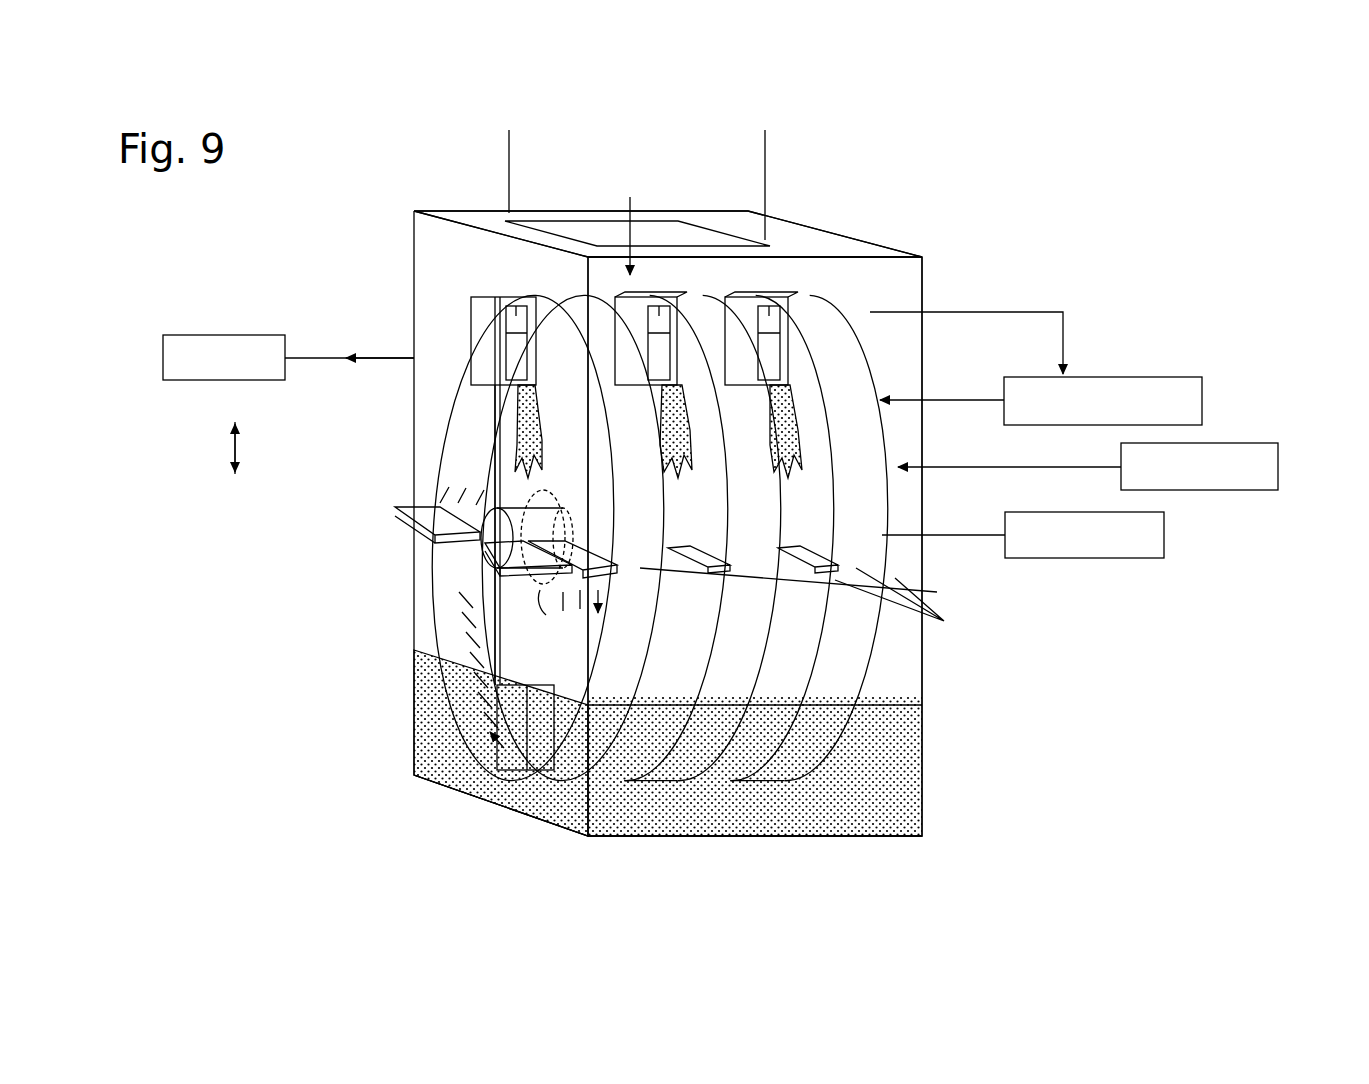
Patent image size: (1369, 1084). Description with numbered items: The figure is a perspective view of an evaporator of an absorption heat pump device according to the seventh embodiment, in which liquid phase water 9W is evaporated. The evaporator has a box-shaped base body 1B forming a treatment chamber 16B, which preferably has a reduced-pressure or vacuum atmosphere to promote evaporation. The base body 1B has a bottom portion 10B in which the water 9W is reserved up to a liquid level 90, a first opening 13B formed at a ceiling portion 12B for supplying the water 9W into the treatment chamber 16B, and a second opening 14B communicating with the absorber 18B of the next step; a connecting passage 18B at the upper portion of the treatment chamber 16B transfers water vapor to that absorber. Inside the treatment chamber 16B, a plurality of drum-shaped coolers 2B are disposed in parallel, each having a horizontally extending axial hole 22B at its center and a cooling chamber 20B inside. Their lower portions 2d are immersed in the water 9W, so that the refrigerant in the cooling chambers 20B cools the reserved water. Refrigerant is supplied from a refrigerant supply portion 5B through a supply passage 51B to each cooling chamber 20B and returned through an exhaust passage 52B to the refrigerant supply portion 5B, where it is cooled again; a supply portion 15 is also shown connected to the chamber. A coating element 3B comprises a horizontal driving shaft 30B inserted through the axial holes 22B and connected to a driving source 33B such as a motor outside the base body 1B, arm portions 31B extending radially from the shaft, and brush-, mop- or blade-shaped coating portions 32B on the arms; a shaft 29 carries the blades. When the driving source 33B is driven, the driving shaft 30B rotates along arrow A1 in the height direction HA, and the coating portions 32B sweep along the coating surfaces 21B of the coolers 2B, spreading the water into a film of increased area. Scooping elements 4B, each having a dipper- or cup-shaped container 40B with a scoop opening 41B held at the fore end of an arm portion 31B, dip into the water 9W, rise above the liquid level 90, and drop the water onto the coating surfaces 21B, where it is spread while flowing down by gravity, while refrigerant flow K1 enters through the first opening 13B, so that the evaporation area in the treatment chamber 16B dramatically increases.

The base body 1B is at (927, 661).
The ceiling portion 12B is at (775, 235).
The first opening 13B is at (697, 237).
The treatment chamber 16B is at (892, 285).
The bottom portion 10B is at (525, 818).
The lower portions 2d is at (673, 786).
The liquid phase water 9W is at (515, 393).
The liquid level 90 is at (897, 699).
The cooling chamber 20B is at (840, 357).
The coating surfaces 21B is at (572, 420).
The container 40B is at (627, 293).
The scoop opening 41B is at (516, 300).
The scooping element 4B is at (480, 313).
The arm portions 31B is at (480, 432).
The axial hole 22B is at (539, 454).
The refrigerant inflow direction K1 is at (631, 196).
The driving shaft 30B is at (477, 548).
The coating element 3B is at (392, 515).
The coating portions 32B is at (417, 510).
The rotary shaft 29 is at (705, 535).
The coolers 2B is at (905, 601).
The arrow A1 is at (545, 598).
The connecting passage 18B is at (337, 357).
The second opening 14B is at (412, 362).
The height direction HA is at (235, 440).
The refrigerant supply portion 5B is at (1202, 397).
The exhaust passage 52B is at (1063, 318).
The supply passage 51B is at (948, 403).
The supply portion 15 is at (1278, 460).
The driving source 33B is at (1164, 537).